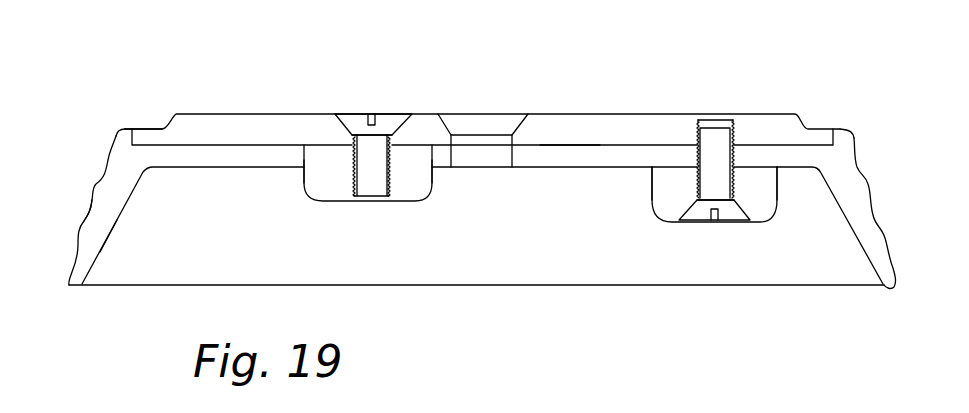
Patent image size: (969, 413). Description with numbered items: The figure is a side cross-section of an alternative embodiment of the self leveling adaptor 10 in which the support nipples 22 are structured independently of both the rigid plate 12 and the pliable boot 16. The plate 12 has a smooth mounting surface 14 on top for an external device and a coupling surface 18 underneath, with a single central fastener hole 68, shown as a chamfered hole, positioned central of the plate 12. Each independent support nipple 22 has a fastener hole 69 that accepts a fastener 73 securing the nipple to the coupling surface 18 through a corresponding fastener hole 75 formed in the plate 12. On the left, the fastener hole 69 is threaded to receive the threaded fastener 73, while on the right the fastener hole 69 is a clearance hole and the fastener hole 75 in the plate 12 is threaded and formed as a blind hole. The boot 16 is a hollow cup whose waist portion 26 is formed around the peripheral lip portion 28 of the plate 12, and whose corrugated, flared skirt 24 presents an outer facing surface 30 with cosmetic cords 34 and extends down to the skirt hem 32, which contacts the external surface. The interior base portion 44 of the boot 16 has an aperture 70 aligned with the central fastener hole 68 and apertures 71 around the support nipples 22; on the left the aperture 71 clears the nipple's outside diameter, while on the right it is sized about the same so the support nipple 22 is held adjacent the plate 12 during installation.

The self leveling adaptor 10 is at (191, 70).
The plate 12 is at (238, 136).
The mounting surface 14 is at (203, 116).
The pliable boot 16 is at (112, 205).
The coupling surface 18 is at (560, 147).
The support nipples 22 is at (312, 192).
The skirt 24 is at (92, 211).
The waist portion 26 is at (117, 133).
The peripheral lip portion 28 is at (150, 136).
The outer facing surface 30 is at (90, 223).
The skirt hem 32 is at (68, 285).
The cords 34 is at (94, 186).
The interior base portion 44 is at (566, 148).
The central fastener hole 68 is at (497, 113).
The fastener holes 69 is at (373, 202).
The aperture 70 is at (477, 168).
The apertures 71 is at (303, 170).
The fasteners 73 is at (388, 123).
The fastener holes 75 is at (349, 113).